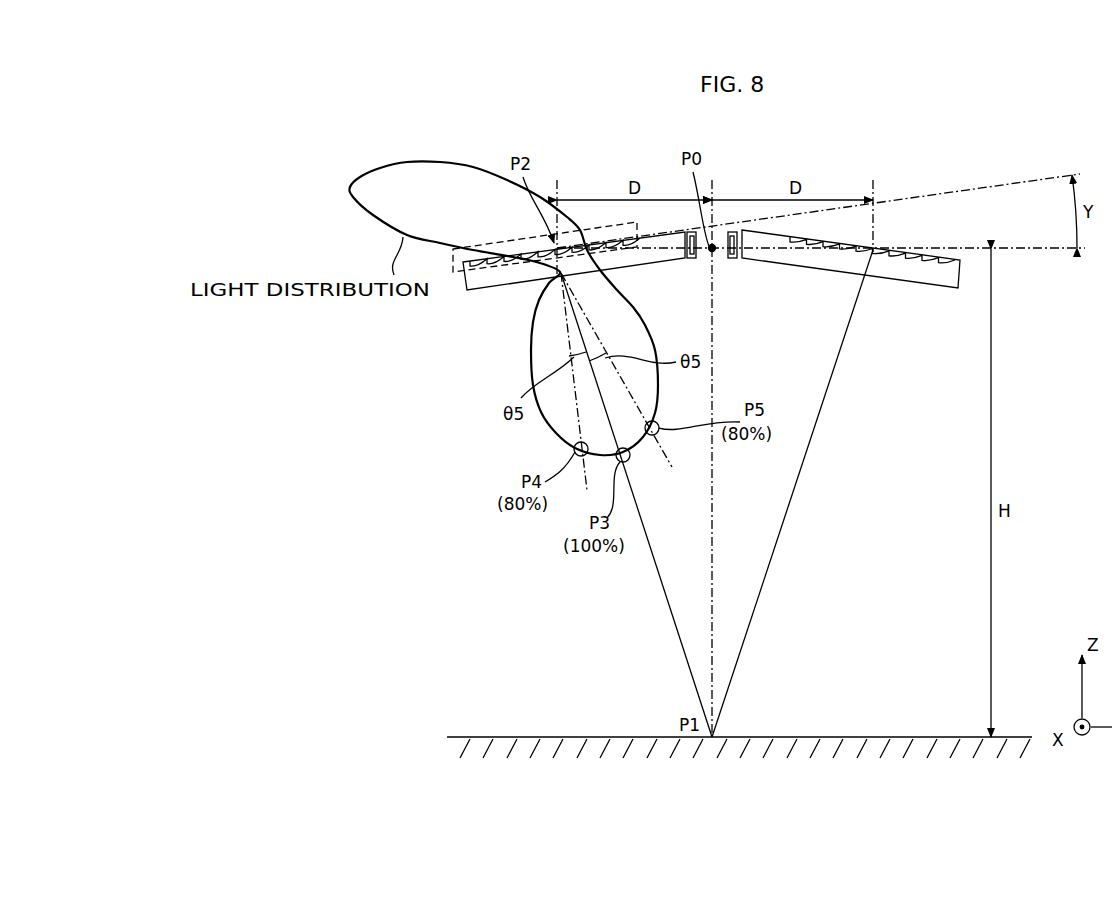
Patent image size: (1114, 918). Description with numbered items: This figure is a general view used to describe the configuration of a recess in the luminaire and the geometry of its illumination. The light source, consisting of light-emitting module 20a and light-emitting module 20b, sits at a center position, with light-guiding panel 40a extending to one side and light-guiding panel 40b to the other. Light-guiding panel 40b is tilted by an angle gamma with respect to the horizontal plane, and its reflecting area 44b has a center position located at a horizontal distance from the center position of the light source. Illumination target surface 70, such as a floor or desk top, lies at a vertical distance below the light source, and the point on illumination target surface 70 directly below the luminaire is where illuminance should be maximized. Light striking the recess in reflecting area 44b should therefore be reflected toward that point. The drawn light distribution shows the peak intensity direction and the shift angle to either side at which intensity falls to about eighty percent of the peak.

The light-guiding panel 40a is at (905, 275).
The light-guiding panel 40b is at (469, 291).
The reflecting area 44b is at (482, 241).
The light-emitting module 20a is at (737, 260).
The light-emitting module 20b is at (693, 260).
The illumination target surface 70 is at (553, 734).